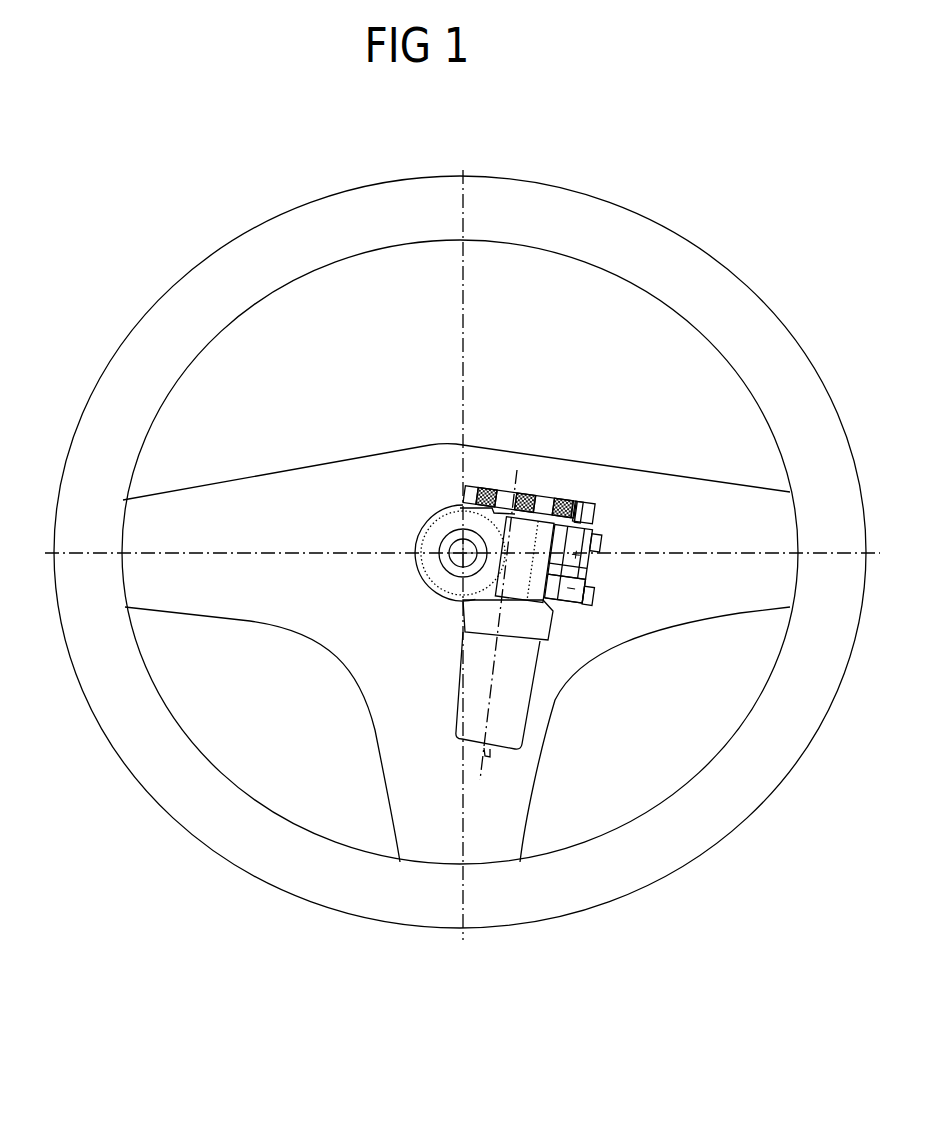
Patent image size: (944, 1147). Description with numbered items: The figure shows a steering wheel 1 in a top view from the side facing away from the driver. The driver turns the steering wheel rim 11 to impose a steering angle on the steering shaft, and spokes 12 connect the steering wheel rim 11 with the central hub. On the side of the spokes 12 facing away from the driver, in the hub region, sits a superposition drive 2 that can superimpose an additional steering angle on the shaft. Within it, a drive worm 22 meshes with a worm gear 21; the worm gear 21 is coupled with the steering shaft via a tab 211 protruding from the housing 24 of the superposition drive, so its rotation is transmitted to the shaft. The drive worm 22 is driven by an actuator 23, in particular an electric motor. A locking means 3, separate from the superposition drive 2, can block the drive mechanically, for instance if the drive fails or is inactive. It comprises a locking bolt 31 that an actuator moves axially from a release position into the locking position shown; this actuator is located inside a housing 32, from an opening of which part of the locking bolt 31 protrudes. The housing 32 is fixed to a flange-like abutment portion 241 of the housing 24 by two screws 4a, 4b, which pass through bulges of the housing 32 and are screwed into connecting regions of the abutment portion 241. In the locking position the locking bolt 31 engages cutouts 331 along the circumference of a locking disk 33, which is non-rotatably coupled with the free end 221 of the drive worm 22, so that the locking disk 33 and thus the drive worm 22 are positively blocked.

The steering wheel 1 is at (208, 234).
The steering wheel rim 11 is at (300, 230).
The spokes 12 is at (240, 610).
The superposition drive 2 is at (458, 624).
The worm gear 21 is at (421, 562).
The tab 211 is at (437, 537).
The free end of the drive worm 221 is at (465, 501).
The drive worm 22 is at (593, 515).
The actuator 23 is at (513, 720).
The housing of the superposition drive 24 is at (548, 614).
The flange-like abutment portion 241 is at (595, 570).
The locking means 3 is at (592, 617).
The locking bolt 31 is at (583, 513).
The housing of the locking means 32 is at (587, 532).
The locking disk 33 is at (558, 499).
The cutouts 331 is at (503, 497).
The screw 4a is at (604, 540).
The screw 4b is at (597, 597).